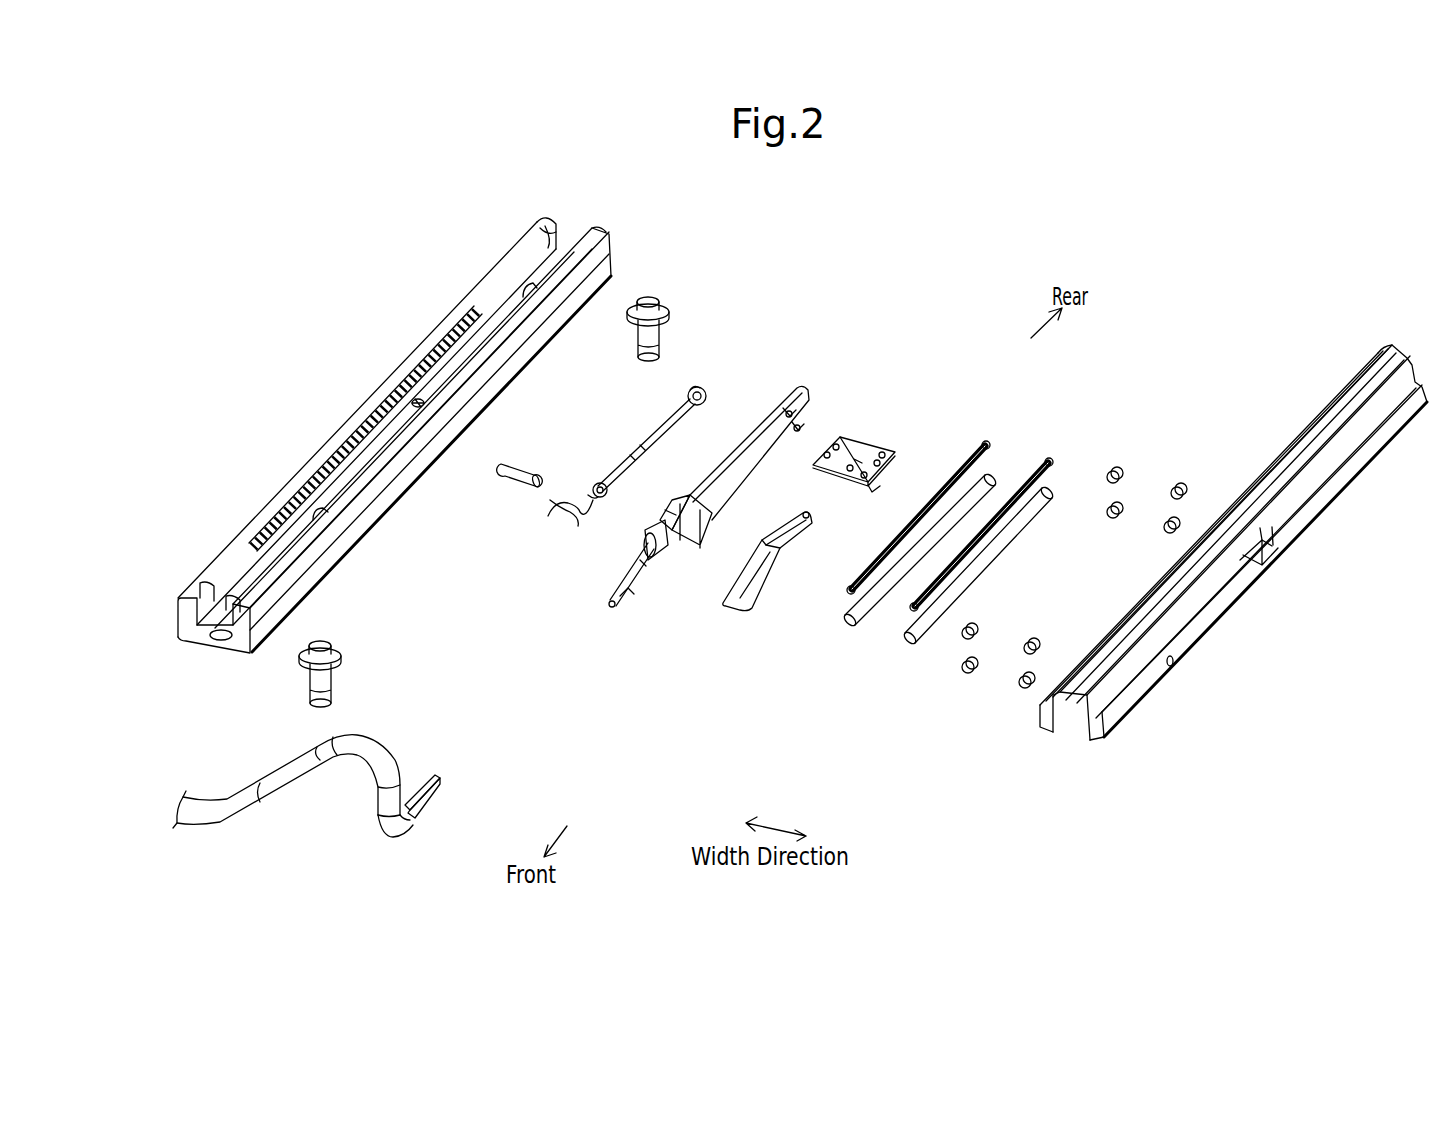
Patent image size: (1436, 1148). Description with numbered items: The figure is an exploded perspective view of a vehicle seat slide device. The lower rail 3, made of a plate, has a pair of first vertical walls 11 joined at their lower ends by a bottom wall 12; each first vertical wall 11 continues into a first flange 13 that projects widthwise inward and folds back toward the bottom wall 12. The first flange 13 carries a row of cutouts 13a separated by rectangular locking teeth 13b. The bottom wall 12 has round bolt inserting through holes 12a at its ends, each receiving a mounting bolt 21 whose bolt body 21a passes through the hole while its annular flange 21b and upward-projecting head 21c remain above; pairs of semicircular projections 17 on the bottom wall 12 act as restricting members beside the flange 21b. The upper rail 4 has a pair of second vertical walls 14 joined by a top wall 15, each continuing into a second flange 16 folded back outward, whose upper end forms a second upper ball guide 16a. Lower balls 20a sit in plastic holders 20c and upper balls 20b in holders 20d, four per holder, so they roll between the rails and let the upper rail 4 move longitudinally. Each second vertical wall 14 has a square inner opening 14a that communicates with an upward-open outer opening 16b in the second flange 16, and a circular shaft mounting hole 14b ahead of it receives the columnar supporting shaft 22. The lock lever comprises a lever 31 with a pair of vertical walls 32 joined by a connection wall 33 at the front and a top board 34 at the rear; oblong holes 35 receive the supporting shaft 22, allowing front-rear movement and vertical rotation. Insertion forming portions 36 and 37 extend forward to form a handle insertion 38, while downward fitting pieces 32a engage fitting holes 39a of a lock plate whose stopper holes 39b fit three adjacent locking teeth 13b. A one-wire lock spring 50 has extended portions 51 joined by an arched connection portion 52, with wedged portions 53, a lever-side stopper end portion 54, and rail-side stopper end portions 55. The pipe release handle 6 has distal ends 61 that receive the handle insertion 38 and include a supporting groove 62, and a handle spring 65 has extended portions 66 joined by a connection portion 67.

The lower rail 3 is at (574, 306).
The upper rail 4 is at (1350, 390).
The release handle 6 is at (235, 824).
The first vertical wall 11 is at (176, 606).
The bottom wall 12 is at (200, 648).
The bolt inserting through hole 12a is at (556, 267).
The first flange 13 is at (262, 592).
The cutout 13a is at (367, 427).
The locking tooth 13b is at (457, 352).
The second vertical wall 14 is at (1061, 717).
The inner opening 14a is at (1260, 543).
The shaft mounting hole 14b is at (1143, 630).
The top wall 15 is at (1107, 650).
The second flange 16 is at (1040, 718).
The second upper ball guide 16a is at (1050, 700).
The outer opening 16b is at (1268, 548).
The projection 17 is at (513, 306).
The lower ball 20a is at (1170, 532).
The upper ball 20b is at (1118, 470).
The holder 20c is at (848, 622).
The holder 20d is at (987, 442).
The mounting bolt 21 is at (649, 300).
The bolt body 21a is at (335, 690).
The flange 21b is at (350, 657).
The head 21c is at (340, 646).
The supporting shaft 22 is at (520, 470).
The lever 31 is at (795, 392).
The vertical wall 32 is at (640, 545).
The fitting piece 32a is at (786, 420).
The connection wall 33 is at (653, 528).
The top board 34 is at (718, 468).
The oblong hole 35 is at (705, 535).
The insertion forming portion 36 is at (628, 600).
The insertion forming portion 37 is at (610, 602).
The handle insertion 38 is at (654, 640).
The fitting hole 39a is at (866, 452).
The stopper hole 39b is at (870, 480).
The lock spring 50 is at (704, 398).
The extended portion 51 is at (645, 458).
The connection portion 52 is at (688, 392).
The wedged portion 53 is at (598, 485).
The lever-side stopper end portion 54 is at (697, 387).
The rail-side stopper end portion 55 is at (557, 500).
The distal end 61 is at (430, 776).
The supporting groove 62 is at (438, 810).
The handle spring 65 is at (730, 610).
The extended portion 66 is at (765, 575).
The connection portion 67 is at (750, 612).